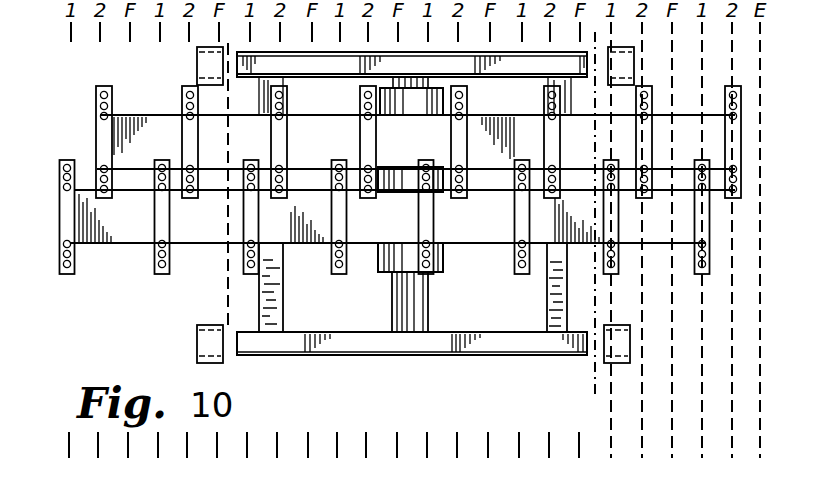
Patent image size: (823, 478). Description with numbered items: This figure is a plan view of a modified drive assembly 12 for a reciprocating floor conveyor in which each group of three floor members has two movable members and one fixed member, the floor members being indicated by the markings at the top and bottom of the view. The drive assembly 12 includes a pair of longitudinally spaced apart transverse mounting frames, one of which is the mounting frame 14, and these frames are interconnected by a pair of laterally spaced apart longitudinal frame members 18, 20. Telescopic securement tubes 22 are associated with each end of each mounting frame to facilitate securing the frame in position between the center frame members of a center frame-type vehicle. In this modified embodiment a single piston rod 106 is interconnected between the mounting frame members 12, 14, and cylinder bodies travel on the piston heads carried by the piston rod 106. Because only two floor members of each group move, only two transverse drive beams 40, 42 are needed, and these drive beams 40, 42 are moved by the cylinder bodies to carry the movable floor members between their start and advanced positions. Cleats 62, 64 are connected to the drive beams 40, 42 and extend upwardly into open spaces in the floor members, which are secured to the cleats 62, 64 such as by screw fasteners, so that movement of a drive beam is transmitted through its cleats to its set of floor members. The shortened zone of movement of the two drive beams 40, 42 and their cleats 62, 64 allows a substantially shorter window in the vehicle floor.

The drive assembly 12 is at (345, 62).
The transverse mounting frame 14 is at (313, 352).
The longitudinal frame member 18 is at (284, 300).
The longitudinal frame member 20 is at (556, 304).
The telescopic securement tube 22 is at (203, 66).
The transverse drive beam 40 is at (118, 236).
The transverse drive beam 42 is at (145, 123).
The cleat 62 is at (70, 223).
The cleat 64 is at (105, 137).
The piston rod 106 is at (428, 316).